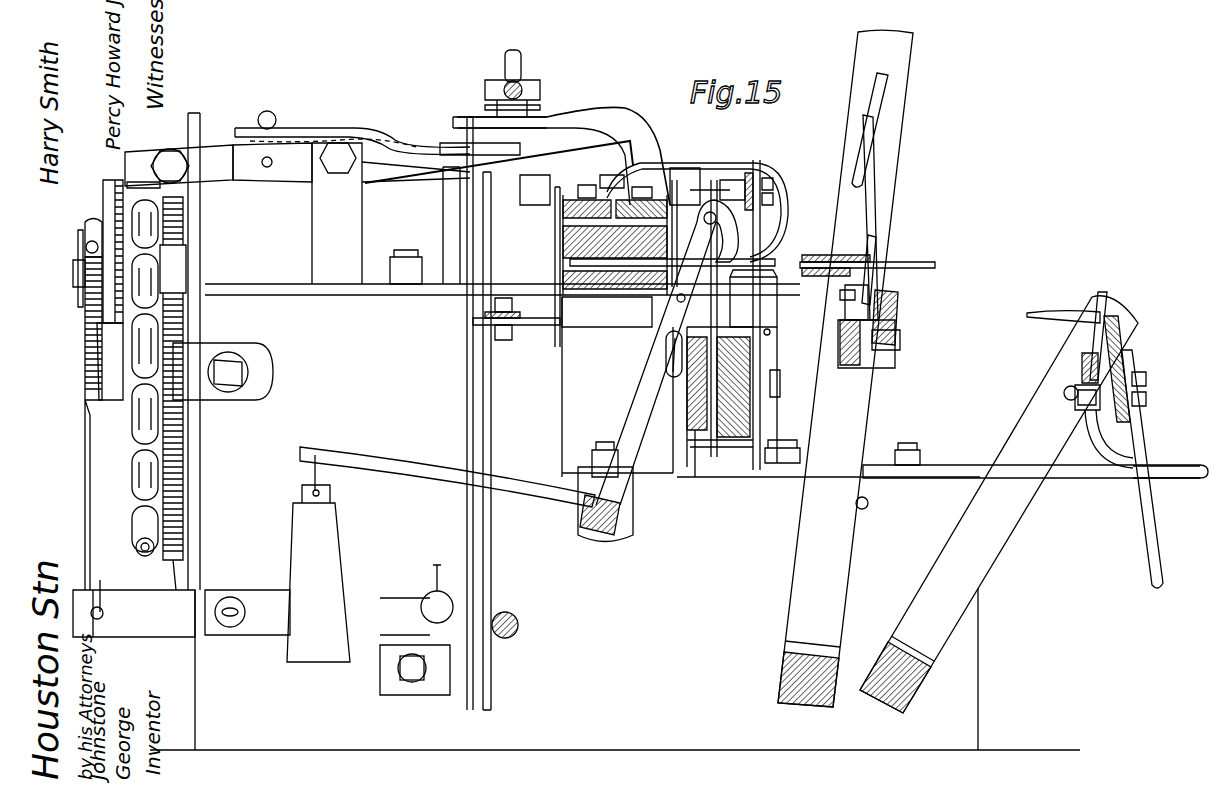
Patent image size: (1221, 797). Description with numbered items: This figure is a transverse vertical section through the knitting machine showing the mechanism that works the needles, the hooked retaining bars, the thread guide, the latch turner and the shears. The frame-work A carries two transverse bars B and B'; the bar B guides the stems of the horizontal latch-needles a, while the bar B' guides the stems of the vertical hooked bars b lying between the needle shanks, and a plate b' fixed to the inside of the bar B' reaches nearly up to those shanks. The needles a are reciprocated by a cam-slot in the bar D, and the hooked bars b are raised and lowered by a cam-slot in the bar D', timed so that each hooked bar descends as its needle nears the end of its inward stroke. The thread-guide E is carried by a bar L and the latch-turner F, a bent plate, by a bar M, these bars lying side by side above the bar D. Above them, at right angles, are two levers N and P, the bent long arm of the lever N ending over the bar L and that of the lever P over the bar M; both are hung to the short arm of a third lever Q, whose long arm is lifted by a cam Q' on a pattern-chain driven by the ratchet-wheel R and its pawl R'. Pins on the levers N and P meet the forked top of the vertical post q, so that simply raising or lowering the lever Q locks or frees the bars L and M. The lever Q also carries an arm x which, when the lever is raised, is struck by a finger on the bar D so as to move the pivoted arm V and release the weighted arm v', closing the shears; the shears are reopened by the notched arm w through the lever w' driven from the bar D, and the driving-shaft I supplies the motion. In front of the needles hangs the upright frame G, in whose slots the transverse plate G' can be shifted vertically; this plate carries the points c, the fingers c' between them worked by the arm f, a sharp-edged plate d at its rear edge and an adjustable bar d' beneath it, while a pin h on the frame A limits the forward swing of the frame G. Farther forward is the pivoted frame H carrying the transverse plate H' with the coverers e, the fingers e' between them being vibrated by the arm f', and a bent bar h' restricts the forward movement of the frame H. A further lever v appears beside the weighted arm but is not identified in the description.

The frame-work A is at (615, 431).
The vertical post q is at (386, 213).
The lever Q is at (379, 163).
The arm x is at (365, 142).
The hooked bars b is at (539, 196).
The ratchet-wheel R is at (98, 290).
The pawl R' is at (102, 405).
The cam Q' is at (147, 393).
The weighted arm v' is at (447, 477).
The lever v is at (658, 371).
The pivoted arm V is at (468, 441).
The lever P is at (561, 156).
The lever N is at (654, 205).
The bar L is at (587, 210).
The bar M is at (641, 210).
The needle-operating bar D is at (615, 242).
The transverse bar B is at (620, 238).
The latch-needles a is at (672, 253).
The lever w' is at (516, 267).
The notched arm w is at (607, 322).
The thread-guide E is at (762, 206).
The latch-turner F is at (720, 208).
The plate b' is at (679, 335).
The transverse bar B' is at (697, 383).
The bar D' is at (720, 323).
The driving-shaft I is at (518, 625).
The upright frame G is at (846, 368).
The arm f is at (870, 196).
The points c is at (875, 265).
The fingers c' is at (886, 269).
The sharp-edged plate d is at (836, 244).
The vertically-adjustable bar d' is at (826, 281).
The transverse plate G' is at (865, 337).
The pin h is at (869, 503).
The bent bar h' is at (1035, 458).
The pivoted frame H is at (999, 504).
The coverers e is at (1063, 304).
The fingers e' is at (1107, 324).
The transverse plate H' is at (1142, 466).
The arm f' is at (1166, 460).